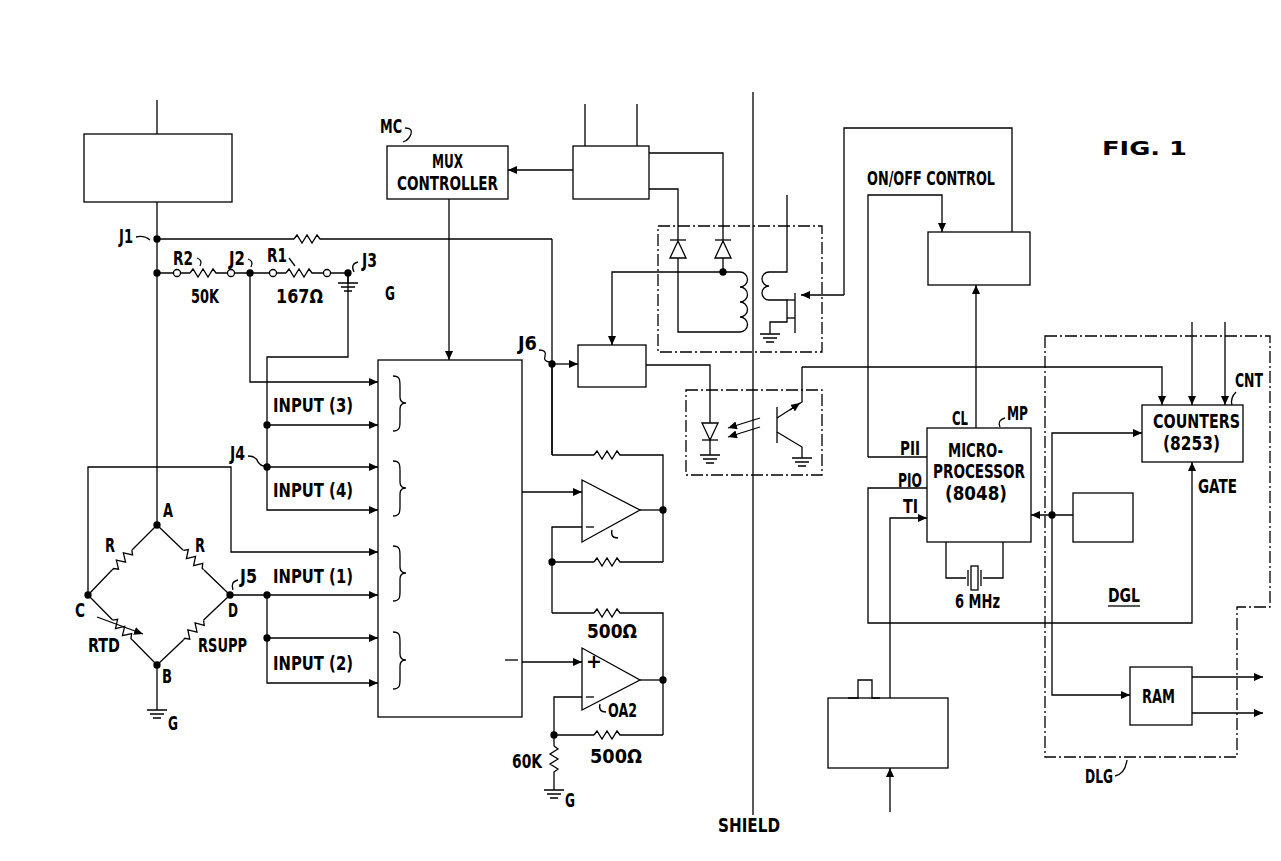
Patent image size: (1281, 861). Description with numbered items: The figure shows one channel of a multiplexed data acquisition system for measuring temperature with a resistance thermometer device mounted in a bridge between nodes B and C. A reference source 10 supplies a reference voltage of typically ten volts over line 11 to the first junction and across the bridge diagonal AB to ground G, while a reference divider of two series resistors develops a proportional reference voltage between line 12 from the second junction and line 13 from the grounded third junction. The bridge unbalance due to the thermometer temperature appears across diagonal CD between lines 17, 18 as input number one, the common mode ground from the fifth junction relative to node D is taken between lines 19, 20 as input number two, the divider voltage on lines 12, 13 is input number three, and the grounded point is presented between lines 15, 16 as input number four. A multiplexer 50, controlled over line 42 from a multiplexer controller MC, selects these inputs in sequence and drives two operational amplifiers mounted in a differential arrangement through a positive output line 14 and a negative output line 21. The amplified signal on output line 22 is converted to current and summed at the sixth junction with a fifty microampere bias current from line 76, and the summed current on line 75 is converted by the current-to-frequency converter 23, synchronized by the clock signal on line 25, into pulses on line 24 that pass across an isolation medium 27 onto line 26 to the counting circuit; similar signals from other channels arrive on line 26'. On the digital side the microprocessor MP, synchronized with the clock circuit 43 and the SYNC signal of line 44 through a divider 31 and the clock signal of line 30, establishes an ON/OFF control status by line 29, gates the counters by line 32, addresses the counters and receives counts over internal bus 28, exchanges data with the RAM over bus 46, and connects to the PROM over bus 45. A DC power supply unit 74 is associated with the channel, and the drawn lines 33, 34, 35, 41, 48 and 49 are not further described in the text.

The reference source 10 is at (192, 134).
The line 11 is at (162, 224).
The line 12 is at (316, 382).
The line 13 is at (311, 431).
The positive output line 14 is at (552, 488).
The line 15 is at (306, 455).
The line 16 is at (322, 515).
The line 17 is at (250, 552).
The line 18 is at (302, 601).
The line 19 is at (301, 635).
The line 20 is at (297, 692).
The negative output line 21 is at (552, 658).
The output line 22 is at (665, 500).
The current-to-frequency converter 23 is at (586, 342).
The line 24 is at (715, 378).
The line 25 is at (609, 301).
The line 26 is at (1015, 374).
The line 26' is at (1169, 358).
The isolation medium 27 is at (822, 408).
The internal bus 28 is at (1087, 432).
The line 29 is at (871, 362).
The clock signal line 30 is at (978, 336).
The divider 31 is at (1034, 256).
The line 32 is at (867, 608).
The 60 Hz input line 33 is at (892, 789).
The convert to TTL level circuit 34 is at (921, 698).
The TTL signal line to T1 35 is at (890, 670).
The power line to mux controller 41 is at (556, 168).
The line 42 is at (449, 303).
The clock circuit 43 is at (645, 236).
The SYNC signal line 44 is at (956, 128).
The bus 45 is at (1057, 510).
The bus 46 is at (1050, 588).
The RAM output line 48 is at (1203, 675).
The RAM output line 49 is at (1193, 718).
The multiplexer 50 is at (388, 359).
The DC power supply unit 74 is at (647, 146).
The line 75 is at (556, 380).
The line 76 is at (551, 274).